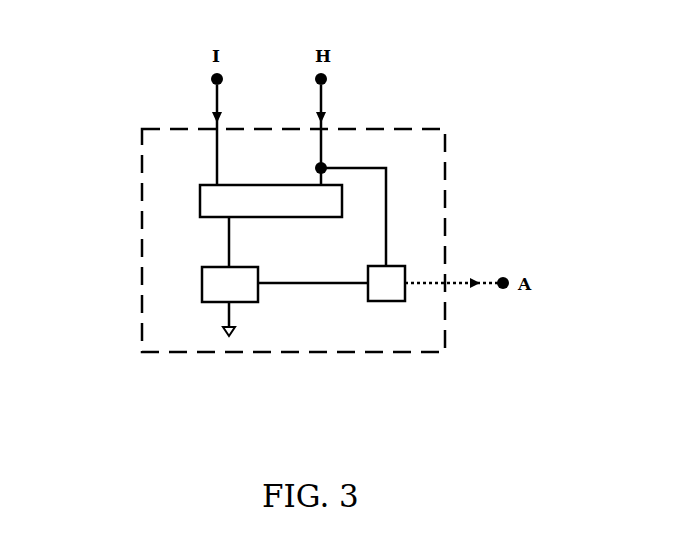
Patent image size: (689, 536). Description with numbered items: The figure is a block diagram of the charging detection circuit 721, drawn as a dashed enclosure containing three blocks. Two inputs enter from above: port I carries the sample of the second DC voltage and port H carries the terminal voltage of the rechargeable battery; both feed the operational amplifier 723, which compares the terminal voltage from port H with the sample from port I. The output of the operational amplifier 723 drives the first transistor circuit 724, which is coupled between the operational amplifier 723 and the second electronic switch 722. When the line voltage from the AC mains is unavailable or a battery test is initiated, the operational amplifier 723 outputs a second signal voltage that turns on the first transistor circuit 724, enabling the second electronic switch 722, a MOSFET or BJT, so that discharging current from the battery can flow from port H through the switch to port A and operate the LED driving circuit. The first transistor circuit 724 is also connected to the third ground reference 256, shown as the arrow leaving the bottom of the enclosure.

The charging detection circuit 721 is at (445, 123).
The second electronic switch 722 is at (401, 300).
The operational amplifier 723 is at (199, 185).
The first transistor circuit 724 is at (202, 284).
The third ground reference 256 is at (228, 334).